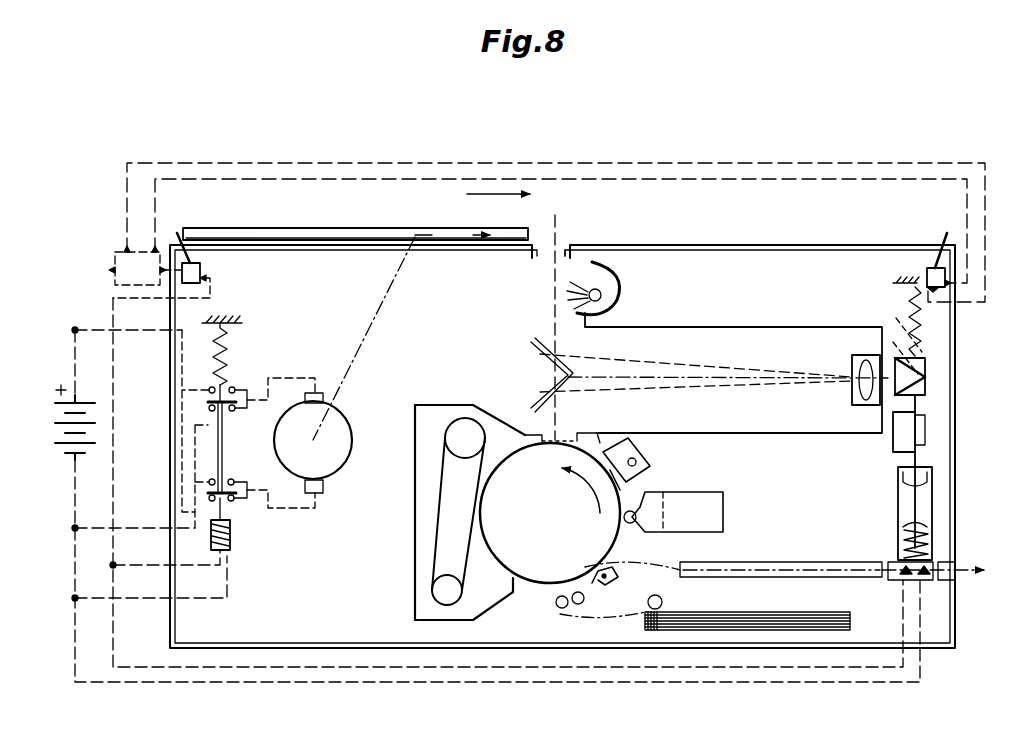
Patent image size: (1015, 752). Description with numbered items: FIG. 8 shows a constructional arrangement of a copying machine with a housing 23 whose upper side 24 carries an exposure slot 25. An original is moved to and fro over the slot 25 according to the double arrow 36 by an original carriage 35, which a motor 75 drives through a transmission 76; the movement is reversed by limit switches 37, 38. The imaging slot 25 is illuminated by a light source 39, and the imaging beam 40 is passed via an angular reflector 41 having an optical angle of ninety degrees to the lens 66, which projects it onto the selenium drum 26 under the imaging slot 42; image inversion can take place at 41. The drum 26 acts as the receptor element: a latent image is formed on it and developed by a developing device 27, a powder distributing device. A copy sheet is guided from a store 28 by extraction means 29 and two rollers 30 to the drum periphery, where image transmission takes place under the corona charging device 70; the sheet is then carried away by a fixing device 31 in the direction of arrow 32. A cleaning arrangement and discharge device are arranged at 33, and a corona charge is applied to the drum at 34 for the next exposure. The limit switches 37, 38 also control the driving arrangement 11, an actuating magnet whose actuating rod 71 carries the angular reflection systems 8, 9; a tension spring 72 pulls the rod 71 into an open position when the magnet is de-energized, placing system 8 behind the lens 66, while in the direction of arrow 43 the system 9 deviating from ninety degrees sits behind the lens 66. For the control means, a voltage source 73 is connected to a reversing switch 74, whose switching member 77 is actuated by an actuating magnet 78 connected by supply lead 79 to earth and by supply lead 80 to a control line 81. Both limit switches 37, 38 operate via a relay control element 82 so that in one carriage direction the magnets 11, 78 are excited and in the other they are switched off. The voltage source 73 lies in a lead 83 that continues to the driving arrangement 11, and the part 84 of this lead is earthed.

The angular reflector system 8 is at (916, 432).
The angular reflector system deviating from 90 degrees 9 is at (925, 377).
The driving arrangement 11 is at (934, 503).
The housing 23 is at (172, 636).
The upper side of the housing 24 is at (722, 247).
The exposure slot 25 is at (572, 244).
The selenium drum 26 is at (490, 520).
The developing device 27 is at (418, 596).
The store 28 is at (762, 632).
The extraction means 29 is at (654, 610).
The rollers 30 is at (556, 606).
The fixing device 31 is at (792, 560).
The arrow 32 is at (975, 578).
The cleaning arrangement and discharge device 33 is at (728, 505).
The corona charging location 34 is at (640, 452).
The original carriage 35 is at (290, 228).
The double arrow 36 is at (452, 235).
The limit switch 37 is at (203, 272).
The limit switch 38 is at (926, 266).
The light source 39 is at (602, 296).
The imaging beam 40 is at (553, 285).
The angular reflector 41 is at (540, 365).
The imaging slot 42 is at (565, 443).
The arrow 43 is at (483, 192).
The lens 66 is at (862, 406).
The corona charging device 70 is at (614, 584).
The actuating rod 71 is at (918, 457).
The tension spring 72 is at (922, 318).
The voltage source 73 is at (58, 432).
The reversing switch 74 is at (237, 437).
The motor 75 is at (343, 452).
The transmission 76 is at (345, 390).
The switching member 77 is at (223, 460).
The actuating magnet 78 is at (231, 541).
The supply lead 79 is at (193, 600).
The supply lead 80 is at (150, 570).
The control line 81 is at (113, 472).
The relay control element 82 is at (118, 268).
The lead 83 is at (75, 370).
The earthed part of lead 84 is at (75, 640).